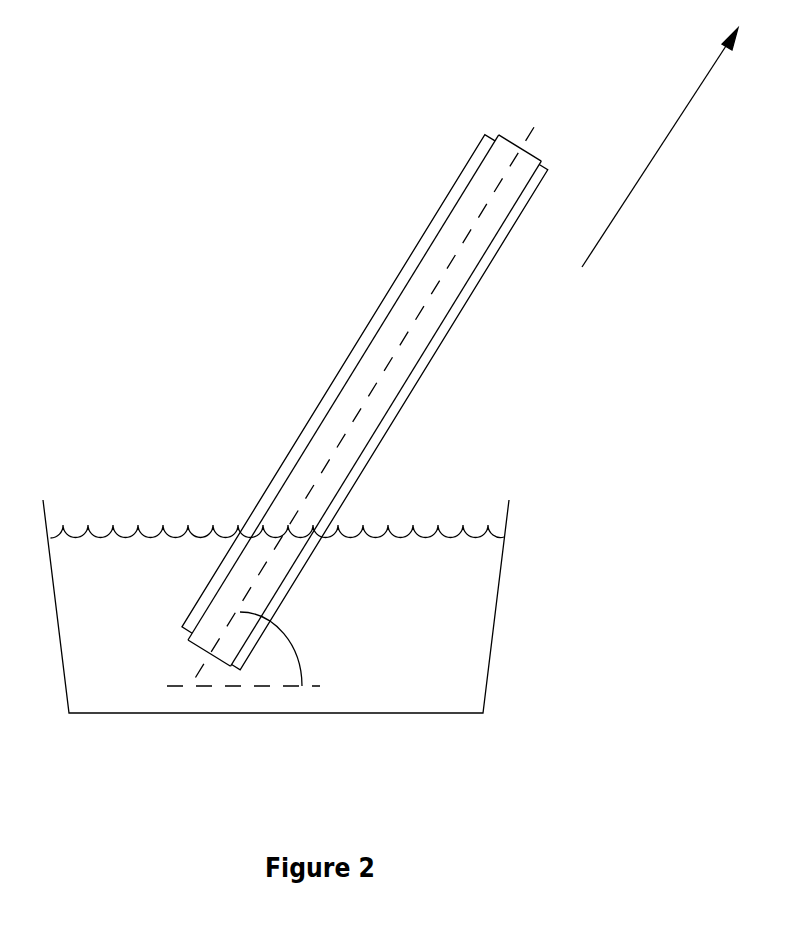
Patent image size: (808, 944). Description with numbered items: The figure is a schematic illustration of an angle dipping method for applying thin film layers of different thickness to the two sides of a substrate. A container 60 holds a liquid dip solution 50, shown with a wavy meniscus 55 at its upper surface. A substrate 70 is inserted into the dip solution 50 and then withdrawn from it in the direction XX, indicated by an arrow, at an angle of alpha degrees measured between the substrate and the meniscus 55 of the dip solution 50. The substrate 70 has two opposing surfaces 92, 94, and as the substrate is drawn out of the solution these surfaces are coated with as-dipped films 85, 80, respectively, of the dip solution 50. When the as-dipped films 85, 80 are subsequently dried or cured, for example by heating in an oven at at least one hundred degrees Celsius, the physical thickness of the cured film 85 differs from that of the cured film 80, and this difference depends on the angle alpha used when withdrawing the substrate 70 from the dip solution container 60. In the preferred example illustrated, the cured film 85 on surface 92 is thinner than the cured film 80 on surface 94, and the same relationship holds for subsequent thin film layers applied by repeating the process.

The liquid dip solution 50 is at (433, 580).
The meniscus 55 is at (101, 533).
The container 60 is at (498, 620).
The substrate 70 is at (513, 180).
The as-dipped film 80 is at (368, 334).
The as-dipped film 85 is at (453, 328).
The opposing surface 92 is at (510, 213).
The opposing surface 94 is at (481, 158).
The withdrawal direction XX is at (683, 141).